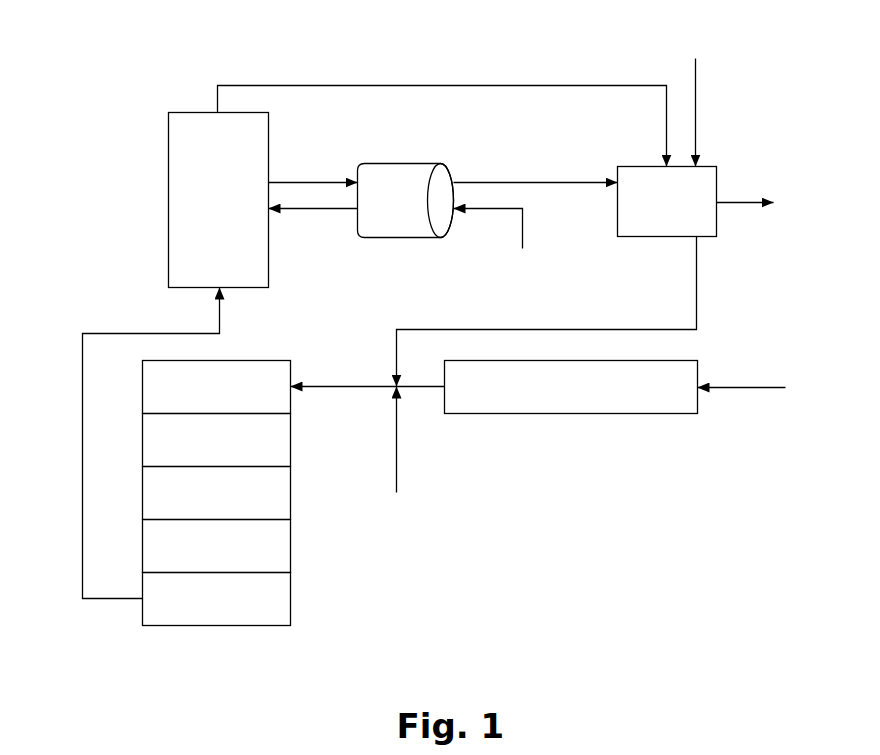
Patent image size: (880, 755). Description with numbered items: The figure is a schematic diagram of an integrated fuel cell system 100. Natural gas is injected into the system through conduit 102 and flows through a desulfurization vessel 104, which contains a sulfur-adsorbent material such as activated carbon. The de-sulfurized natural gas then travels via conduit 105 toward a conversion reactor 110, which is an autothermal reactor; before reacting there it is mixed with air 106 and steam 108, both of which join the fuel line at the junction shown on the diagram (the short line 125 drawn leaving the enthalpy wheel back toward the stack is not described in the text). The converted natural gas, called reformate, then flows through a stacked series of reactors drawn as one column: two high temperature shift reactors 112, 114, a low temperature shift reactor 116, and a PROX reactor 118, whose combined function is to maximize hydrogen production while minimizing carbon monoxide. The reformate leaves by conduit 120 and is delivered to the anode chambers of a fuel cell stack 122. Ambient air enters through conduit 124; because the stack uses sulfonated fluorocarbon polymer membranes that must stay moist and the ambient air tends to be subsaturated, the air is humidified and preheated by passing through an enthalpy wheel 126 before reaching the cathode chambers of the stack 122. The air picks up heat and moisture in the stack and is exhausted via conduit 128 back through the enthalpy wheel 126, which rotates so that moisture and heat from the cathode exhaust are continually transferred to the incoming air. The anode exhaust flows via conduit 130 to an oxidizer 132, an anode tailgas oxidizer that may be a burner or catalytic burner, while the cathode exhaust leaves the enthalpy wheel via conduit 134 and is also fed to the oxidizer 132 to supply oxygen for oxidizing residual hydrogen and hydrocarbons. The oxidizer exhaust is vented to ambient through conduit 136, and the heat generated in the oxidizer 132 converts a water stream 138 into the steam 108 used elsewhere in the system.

The integrated fuel cell system 100 is at (162, 62).
The conduit 102 is at (740, 388).
The desulfurization vessel 104 is at (560, 416).
The conduit 105 is at (323, 390).
The air 106 is at (400, 462).
The steam 108 is at (392, 344).
The conversion reactor 110 is at (216, 397).
The high temperature shift reactor 112 is at (216, 450).
The high temperature shift reactor 114 is at (216, 503).
The low temperature shift reactor 116 is at (216, 556).
The PROX reactor 118 is at (216, 609).
The conduit 120 is at (78, 484).
The fuel cell stack 122 is at (230, 155).
The conduit 124 is at (527, 238).
The return stream 125 is at (288, 211).
The enthalpy wheel 126 is at (412, 209).
The conduit 128 is at (328, 134).
The conduit 130 is at (448, 78).
The oxidizer 132 is at (660, 242).
The conduit 134 is at (556, 176).
The conduit 136 is at (735, 198).
The water stream 138 is at (698, 104).